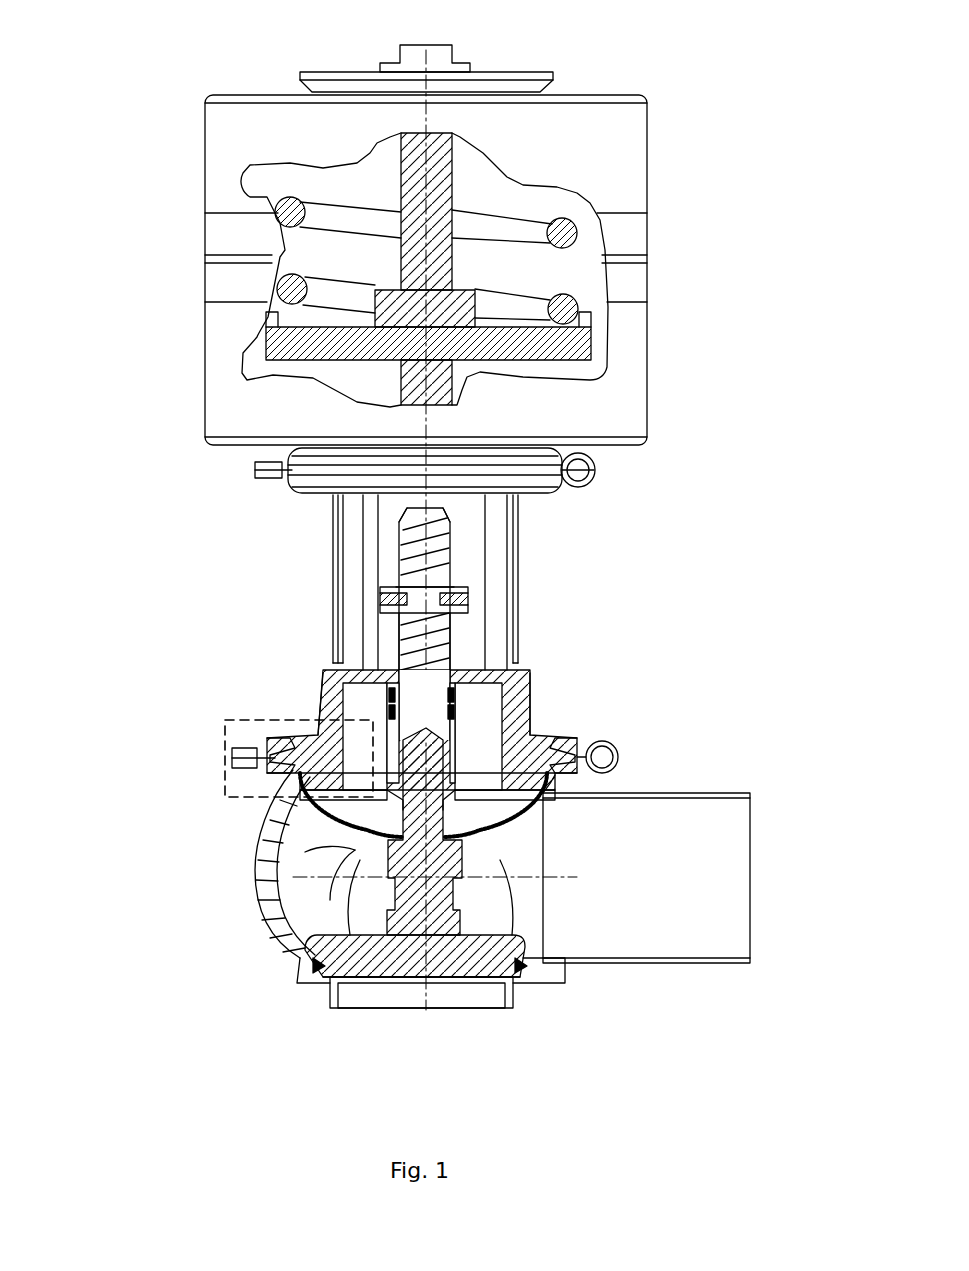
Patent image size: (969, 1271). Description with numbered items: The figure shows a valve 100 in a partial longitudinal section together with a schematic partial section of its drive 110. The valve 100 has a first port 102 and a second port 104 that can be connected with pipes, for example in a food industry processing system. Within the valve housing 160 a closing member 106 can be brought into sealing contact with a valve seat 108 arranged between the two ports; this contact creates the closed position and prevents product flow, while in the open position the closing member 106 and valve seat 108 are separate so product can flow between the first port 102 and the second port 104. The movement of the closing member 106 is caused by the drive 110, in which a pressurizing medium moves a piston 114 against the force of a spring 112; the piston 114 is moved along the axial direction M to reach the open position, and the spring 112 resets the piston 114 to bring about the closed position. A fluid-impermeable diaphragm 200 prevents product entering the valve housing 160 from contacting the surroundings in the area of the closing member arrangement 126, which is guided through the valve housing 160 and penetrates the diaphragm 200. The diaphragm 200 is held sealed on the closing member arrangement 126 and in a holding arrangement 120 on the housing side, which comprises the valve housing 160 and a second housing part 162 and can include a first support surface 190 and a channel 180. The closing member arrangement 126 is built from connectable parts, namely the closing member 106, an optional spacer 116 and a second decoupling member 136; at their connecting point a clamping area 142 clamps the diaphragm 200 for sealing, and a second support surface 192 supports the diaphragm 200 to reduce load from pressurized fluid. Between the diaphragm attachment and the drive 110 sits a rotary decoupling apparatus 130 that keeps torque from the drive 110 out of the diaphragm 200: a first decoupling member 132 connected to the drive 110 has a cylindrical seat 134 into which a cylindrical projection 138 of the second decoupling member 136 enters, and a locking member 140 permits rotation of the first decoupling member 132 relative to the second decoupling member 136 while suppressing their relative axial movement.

The valve 100 is at (155, 138).
The axial direction M is at (427, 120).
The first port 102 is at (712, 831).
The second port 104 is at (357, 998).
The closing member 106 is at (372, 1008).
The valve seat 108 is at (320, 985).
The drive 110 is at (520, 393).
The spring 112 is at (522, 223).
The piston 114 is at (563, 340).
The spacer 116 is at (448, 890).
The holding arrangement 120 is at (270, 786).
The closing member arrangement 126 is at (355, 903).
The rotary decoupling apparatus 130 is at (352, 598).
The first decoupling member 132 is at (440, 580).
The cylindrical seat 134 is at (390, 593).
The second decoupling member 136 is at (435, 650).
The cylindrical projection 138 is at (470, 597).
The locking member 140 is at (395, 603).
The clamping area 142 is at (493, 815).
The valve housing 160 is at (300, 777).
The second housing part 162 is at (325, 742).
The channel 180 is at (553, 735).
The first support surface 190 is at (462, 822).
The second support surface 192 is at (395, 832).
The diaphragm 200 is at (355, 850).